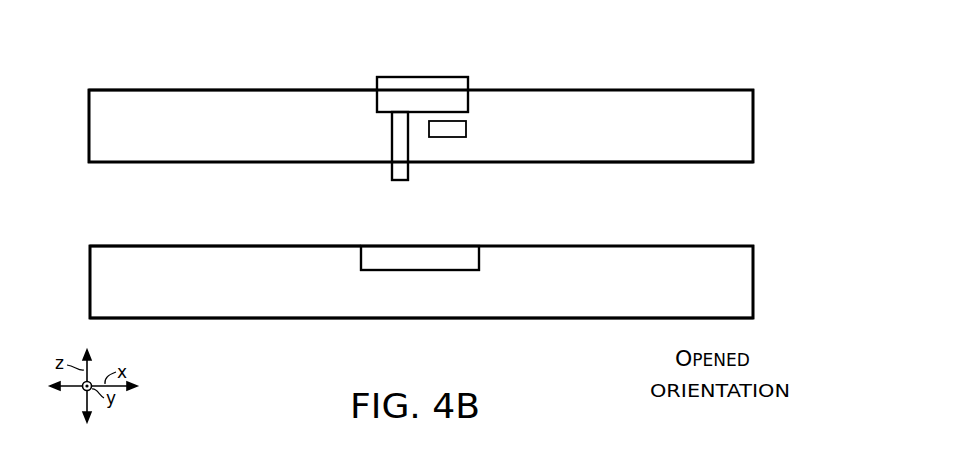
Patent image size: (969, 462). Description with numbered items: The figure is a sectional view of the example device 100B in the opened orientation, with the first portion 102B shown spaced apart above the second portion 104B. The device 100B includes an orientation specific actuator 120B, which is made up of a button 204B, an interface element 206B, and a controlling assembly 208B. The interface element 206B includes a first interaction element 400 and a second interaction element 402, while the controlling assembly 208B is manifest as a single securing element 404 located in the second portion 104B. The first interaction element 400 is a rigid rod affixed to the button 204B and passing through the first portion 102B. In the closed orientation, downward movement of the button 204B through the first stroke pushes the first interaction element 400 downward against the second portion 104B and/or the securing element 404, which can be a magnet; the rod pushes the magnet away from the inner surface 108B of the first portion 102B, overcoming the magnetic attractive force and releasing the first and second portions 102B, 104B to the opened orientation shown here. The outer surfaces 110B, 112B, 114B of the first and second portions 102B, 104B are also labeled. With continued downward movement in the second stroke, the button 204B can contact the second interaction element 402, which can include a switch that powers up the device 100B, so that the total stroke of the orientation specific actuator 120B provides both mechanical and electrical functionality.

The device 100B is at (599, 56).
The first portion 102B is at (170, 134).
The second portion 104B is at (171, 288).
The inner surface 108B is at (652, 170).
The top surface of first portion 110B is at (168, 88).
The top surface of second portion 112B is at (145, 238).
The bottom surface of second portion 114B is at (223, 328).
The orientation specific actuator 120B is at (431, 54).
The button 204B is at (460, 99).
The interface element 206B is at (578, 137).
The controlling assembly 208B is at (354, 261).
The first interaction element 400 is at (400, 172).
The second interaction element 402 is at (457, 128).
The securing element 404 is at (467, 257).